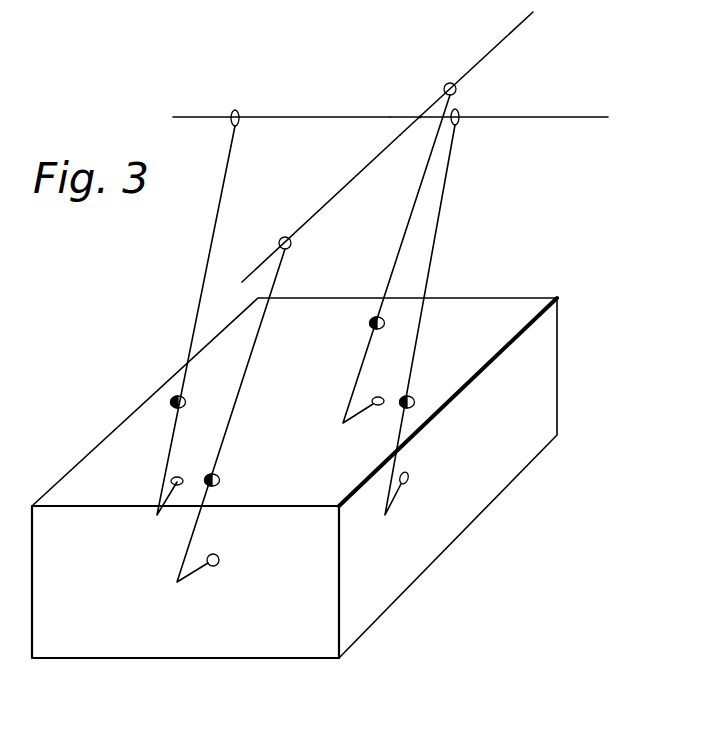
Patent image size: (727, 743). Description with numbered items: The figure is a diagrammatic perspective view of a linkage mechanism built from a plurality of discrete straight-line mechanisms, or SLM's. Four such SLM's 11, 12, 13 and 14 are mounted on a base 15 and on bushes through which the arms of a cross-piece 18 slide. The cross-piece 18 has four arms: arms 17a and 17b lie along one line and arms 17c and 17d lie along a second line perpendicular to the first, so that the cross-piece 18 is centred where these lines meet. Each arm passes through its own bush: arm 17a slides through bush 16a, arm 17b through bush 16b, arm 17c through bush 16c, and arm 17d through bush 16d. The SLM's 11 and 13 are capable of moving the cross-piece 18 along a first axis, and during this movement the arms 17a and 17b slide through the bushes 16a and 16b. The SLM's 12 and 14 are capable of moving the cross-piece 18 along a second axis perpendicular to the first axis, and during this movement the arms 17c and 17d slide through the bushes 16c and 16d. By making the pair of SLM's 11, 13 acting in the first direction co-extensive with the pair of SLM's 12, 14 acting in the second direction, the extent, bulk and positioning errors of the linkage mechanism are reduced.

The straight-line mechanism 11 is at (410, 215).
The straight-line mechanism 12 is at (205, 258).
The straight-line mechanism 13 is at (183, 550).
The straight-line mechanism 14 is at (401, 431).
The base 15 is at (398, 572).
The bush 16a is at (237, 110).
The bush 16b is at (458, 110).
The bush 16c is at (280, 238).
The bush 16d is at (447, 84).
The arm of cross-piece 17a is at (190, 117).
The arm of cross-piece 17b is at (566, 117).
The arm of cross-piece 17c is at (258, 268).
The arm of cross-piece 17d is at (505, 39).
The cross-piece 18 is at (420, 117).